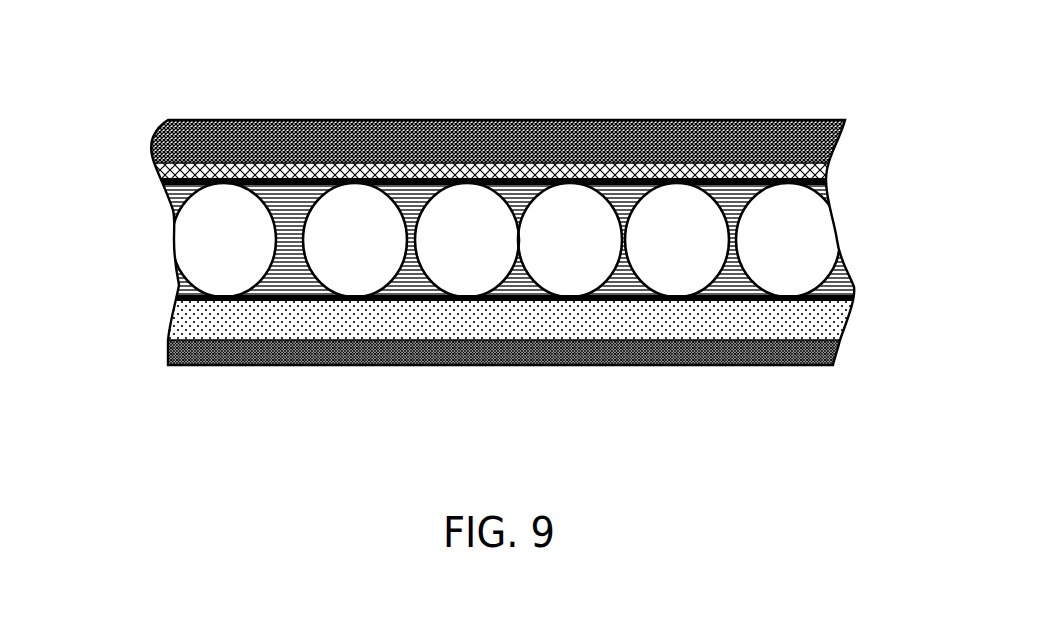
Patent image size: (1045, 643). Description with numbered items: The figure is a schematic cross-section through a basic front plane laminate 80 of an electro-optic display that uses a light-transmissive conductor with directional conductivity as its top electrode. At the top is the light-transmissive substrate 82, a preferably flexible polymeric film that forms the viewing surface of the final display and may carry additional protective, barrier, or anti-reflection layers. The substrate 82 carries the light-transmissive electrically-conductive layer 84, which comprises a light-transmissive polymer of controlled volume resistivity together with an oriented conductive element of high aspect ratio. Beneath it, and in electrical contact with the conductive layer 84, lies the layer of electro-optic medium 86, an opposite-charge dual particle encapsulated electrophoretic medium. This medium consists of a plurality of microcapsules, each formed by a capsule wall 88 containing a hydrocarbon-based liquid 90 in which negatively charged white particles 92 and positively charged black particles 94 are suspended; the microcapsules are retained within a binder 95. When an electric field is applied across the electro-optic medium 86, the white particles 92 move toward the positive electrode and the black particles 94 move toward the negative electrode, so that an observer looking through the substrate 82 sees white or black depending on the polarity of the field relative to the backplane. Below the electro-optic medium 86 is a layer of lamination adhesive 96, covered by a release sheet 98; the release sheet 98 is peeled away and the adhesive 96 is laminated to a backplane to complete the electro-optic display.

The front plane laminate 80 is at (486, 284).
The light-transmissive substrate 82 is at (168, 137).
The light-transmissive electrically-conductive layer 84 is at (158, 171).
The layer of electro-optic medium 86 is at (160, 238).
The capsule wall 88 is at (180, 284).
The hydrocarbon-based liquid 90 is at (818, 242).
The negatively charged white particles 92 is at (852, 294).
The positively charged black particles 94 is at (825, 200).
The binder 95 is at (173, 206).
The layer of lamination adhesive 96 is at (797, 325).
The release sheet 98 is at (166, 352).